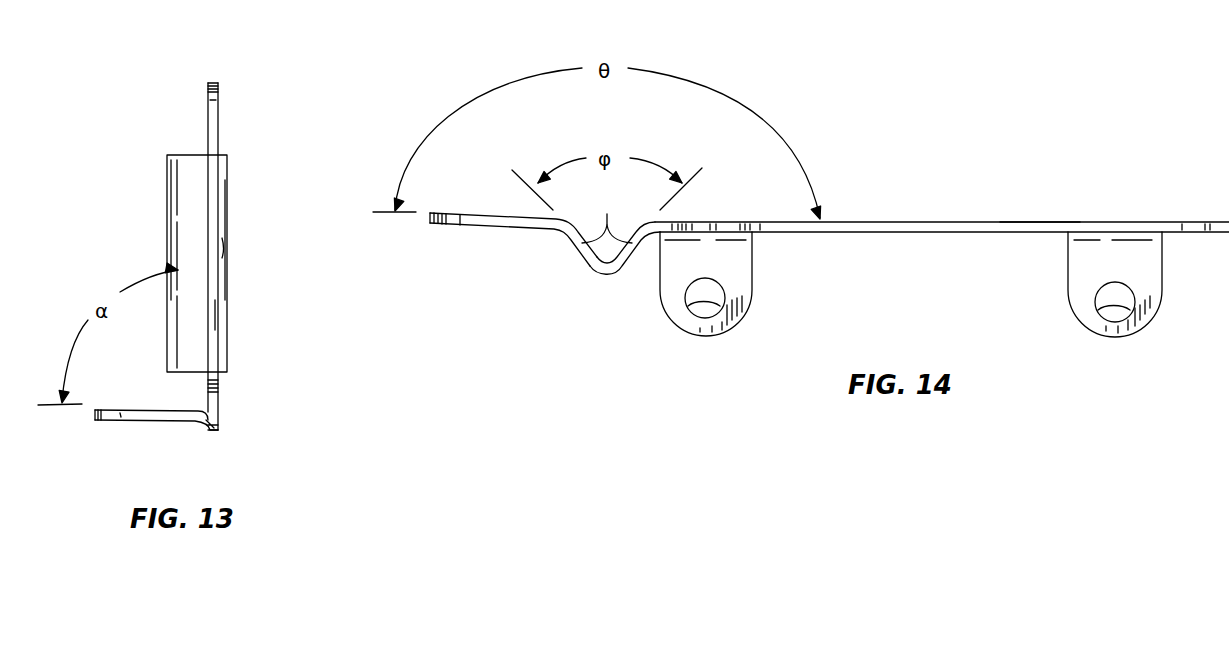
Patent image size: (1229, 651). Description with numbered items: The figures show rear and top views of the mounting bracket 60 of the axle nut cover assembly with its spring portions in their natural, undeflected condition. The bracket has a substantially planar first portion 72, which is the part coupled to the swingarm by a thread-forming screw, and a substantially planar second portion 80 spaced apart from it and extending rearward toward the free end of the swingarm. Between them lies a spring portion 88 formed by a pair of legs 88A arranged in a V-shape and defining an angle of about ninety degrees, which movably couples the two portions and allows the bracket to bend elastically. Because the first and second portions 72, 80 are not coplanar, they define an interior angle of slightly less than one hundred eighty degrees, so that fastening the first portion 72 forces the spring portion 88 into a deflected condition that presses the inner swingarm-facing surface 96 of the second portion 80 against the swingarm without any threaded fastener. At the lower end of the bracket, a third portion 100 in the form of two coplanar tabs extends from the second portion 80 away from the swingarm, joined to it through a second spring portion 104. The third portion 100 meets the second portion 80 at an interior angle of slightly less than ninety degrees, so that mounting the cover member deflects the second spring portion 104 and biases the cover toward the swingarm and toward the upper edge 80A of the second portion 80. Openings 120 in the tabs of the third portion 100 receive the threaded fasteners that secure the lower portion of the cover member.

In FIG. 13, the mounting bracket 60 is at (244, 108).
In FIG. 14, the mounting bracket 60 is at (1150, 165).
In FIG. 13, the first portion 72 is at (223, 203).
In FIG. 14, the first portion 72 is at (486, 224).
In FIG. 13, the second portion 80 is at (220, 355).
In FIG. 14, the second portion 80 is at (925, 222).
In FIG. 13, the upper edge of the second portion 80A is at (213, 82).
In FIG. 13, the spring portion 88 is at (157, 207).
In FIG. 14, the spring portion 88 is at (600, 278).
In FIG. 13, the legs of the spring portion 88A is at (190, 162).
In FIG. 14, the legs of the spring portion 88A is at (607, 216).
In FIG. 13, the inner swingarm-facing surface 96 is at (220, 318).
In FIG. 14, the inner swingarm-facing surface 96 is at (1038, 220).
In FIG. 13, the third portion 100 is at (141, 423).
In FIG. 14, the third portion 100 is at (720, 267).
In FIG. 13, the second spring portion 104 is at (219, 425).
In FIG. 14, the openings 120 is at (705, 312).